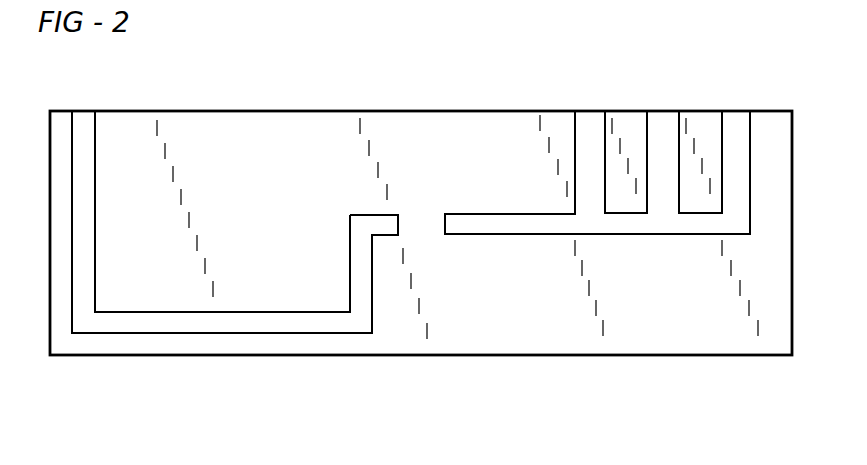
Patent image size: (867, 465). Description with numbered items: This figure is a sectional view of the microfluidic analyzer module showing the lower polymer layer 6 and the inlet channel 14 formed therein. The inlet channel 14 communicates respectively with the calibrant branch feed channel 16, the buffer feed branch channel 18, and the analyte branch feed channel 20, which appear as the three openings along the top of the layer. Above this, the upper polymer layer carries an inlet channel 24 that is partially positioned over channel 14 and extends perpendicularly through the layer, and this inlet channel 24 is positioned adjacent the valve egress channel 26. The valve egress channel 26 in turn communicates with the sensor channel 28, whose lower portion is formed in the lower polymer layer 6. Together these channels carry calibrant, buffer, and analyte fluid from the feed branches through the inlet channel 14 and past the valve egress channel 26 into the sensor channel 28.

The lower polymer layer 6 is at (196, 148).
The inlet channel 14 is at (520, 225).
The calibrant branch feed channel 16 is at (740, 120).
The buffer feed branch channel 18 is at (665, 120).
The analyte branch feed channel 20 is at (592, 117).
The inlet channel 24 is at (468, 223).
The valve egress channel 26 is at (385, 222).
The sensor channel 28 is at (168, 323).